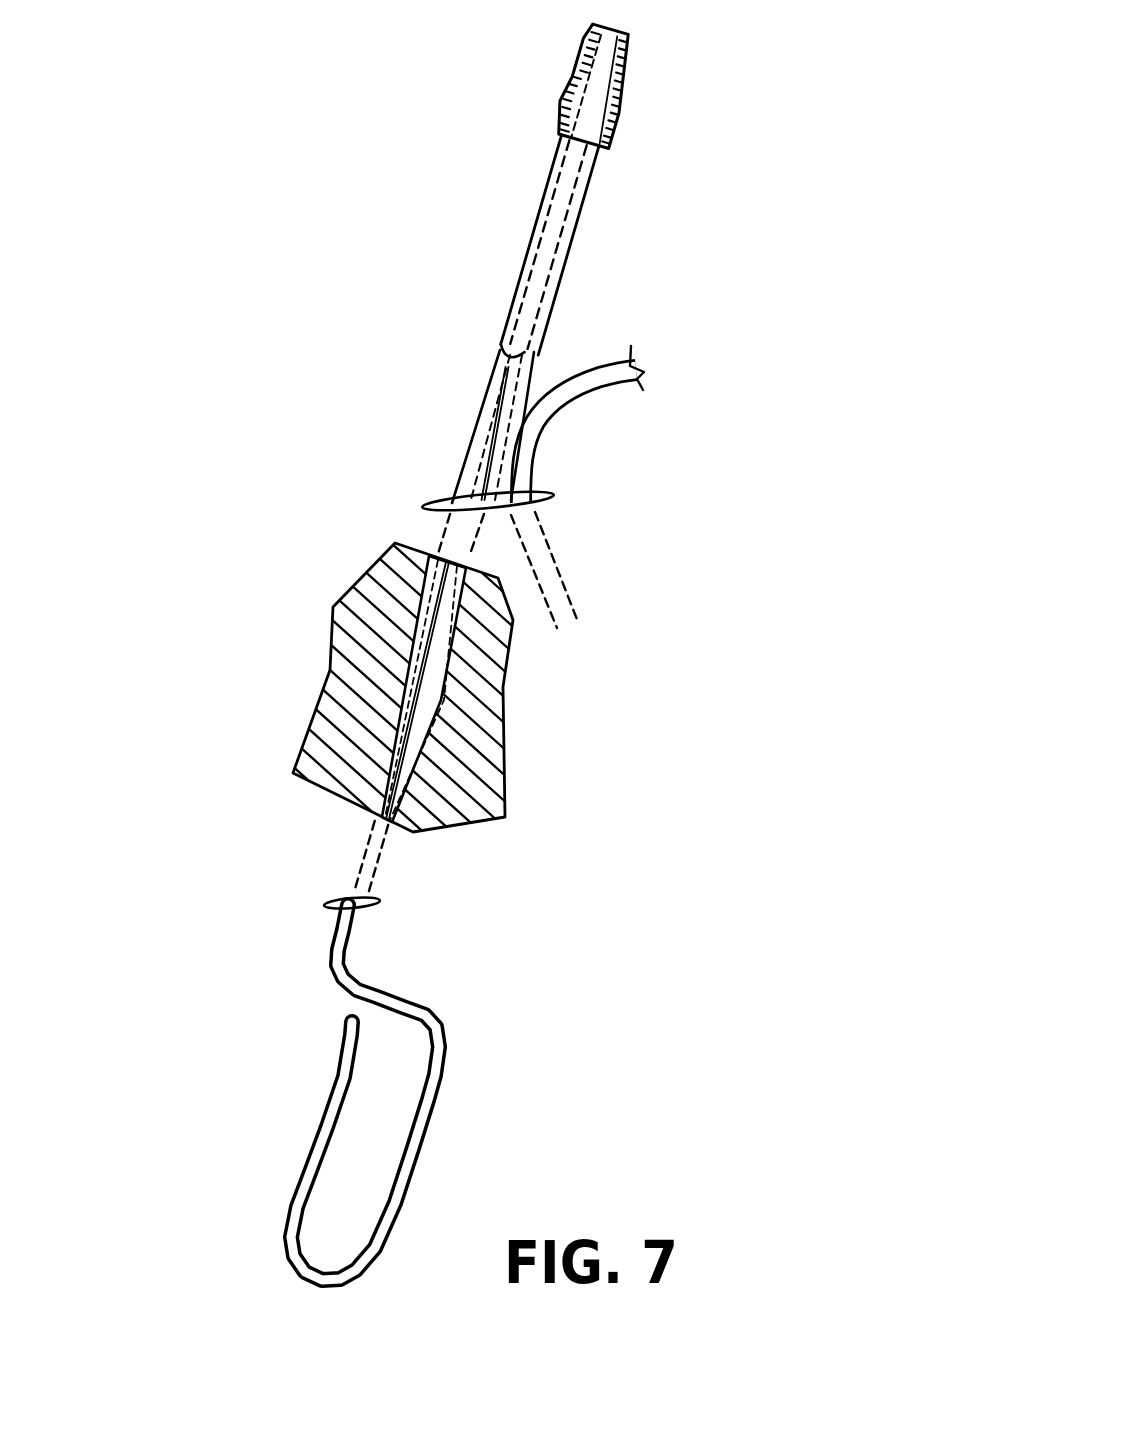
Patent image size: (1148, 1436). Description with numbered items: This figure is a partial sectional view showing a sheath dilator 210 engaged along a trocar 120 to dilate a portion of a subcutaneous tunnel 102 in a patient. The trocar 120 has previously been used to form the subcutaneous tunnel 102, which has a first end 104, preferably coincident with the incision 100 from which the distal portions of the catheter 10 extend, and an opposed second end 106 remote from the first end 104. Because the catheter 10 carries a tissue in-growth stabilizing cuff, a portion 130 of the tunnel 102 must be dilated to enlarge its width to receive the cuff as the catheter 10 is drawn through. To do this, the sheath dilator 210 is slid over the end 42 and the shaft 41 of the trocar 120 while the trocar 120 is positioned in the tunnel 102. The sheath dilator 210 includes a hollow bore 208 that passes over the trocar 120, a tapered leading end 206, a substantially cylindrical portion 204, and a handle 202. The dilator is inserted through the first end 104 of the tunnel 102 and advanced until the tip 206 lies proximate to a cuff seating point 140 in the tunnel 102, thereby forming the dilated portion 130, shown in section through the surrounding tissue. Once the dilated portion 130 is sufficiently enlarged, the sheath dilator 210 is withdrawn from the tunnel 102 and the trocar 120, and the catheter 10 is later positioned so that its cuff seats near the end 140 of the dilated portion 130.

The catheter 10 is at (581, 393).
The shaft 41 is at (423, 762).
The end 42 is at (490, 383).
The incision 100 is at (382, 472).
The subcutaneous tunnel 102 is at (372, 828).
The first end 104 is at (457, 500).
The second end 106 is at (377, 903).
The trocar 120 is at (503, 1032).
The dilated portion 130 is at (452, 650).
The cuff seating point 140 is at (400, 707).
The handle 202 is at (627, 50).
The substantially cylindrical portion 204 is at (560, 198).
The tapered leading end 206 is at (413, 737).
The hollow bore 208 is at (490, 350).
The sheath dilator 210 is at (553, 293).